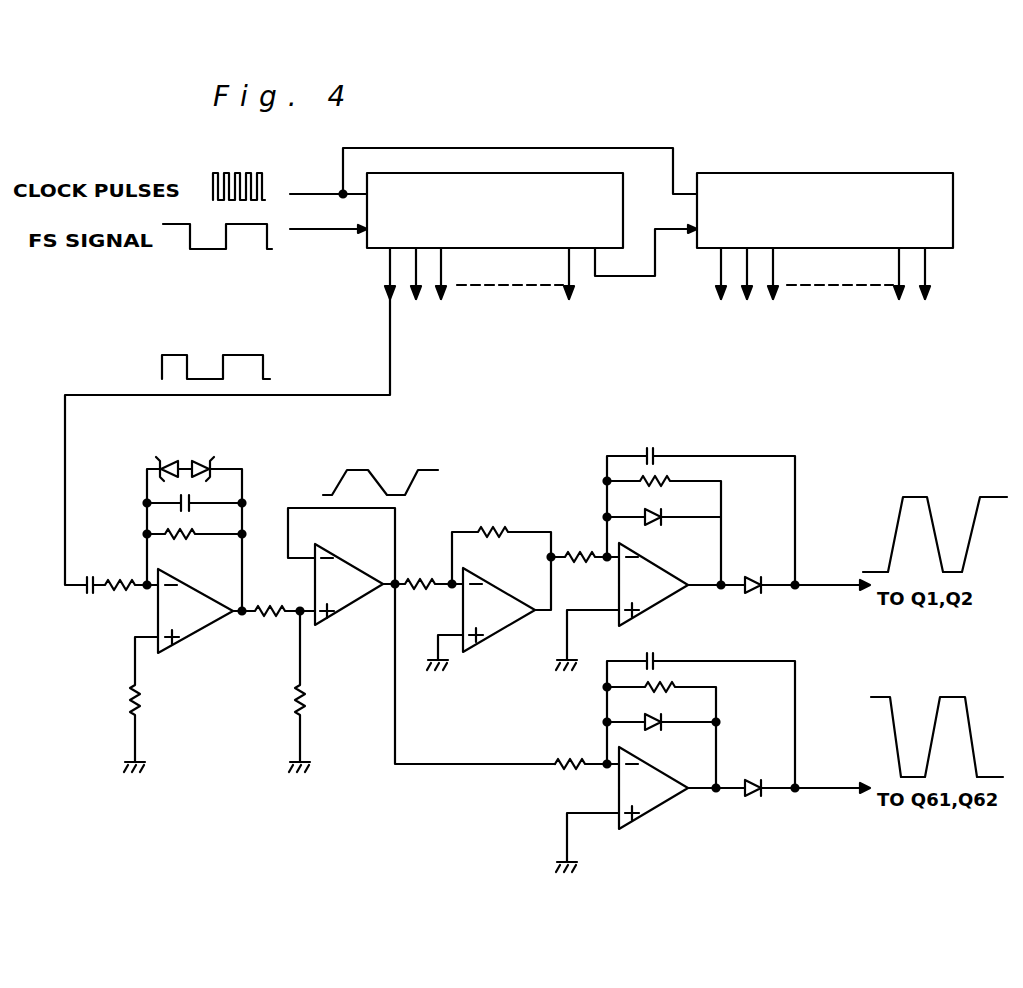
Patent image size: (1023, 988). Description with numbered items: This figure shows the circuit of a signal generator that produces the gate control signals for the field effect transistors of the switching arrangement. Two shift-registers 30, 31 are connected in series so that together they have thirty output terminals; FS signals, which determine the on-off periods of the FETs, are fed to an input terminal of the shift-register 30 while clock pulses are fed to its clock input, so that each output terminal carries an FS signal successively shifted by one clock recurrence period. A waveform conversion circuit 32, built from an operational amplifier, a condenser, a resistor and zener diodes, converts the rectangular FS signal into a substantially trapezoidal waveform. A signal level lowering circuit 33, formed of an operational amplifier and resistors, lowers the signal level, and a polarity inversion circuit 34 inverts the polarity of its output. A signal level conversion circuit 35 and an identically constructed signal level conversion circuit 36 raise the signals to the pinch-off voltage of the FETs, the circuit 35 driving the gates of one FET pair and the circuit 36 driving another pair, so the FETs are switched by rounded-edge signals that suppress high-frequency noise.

The shift-register 30 is at (623, 249).
The shift-register 31 is at (953, 249).
The waveform conversion circuit 32 is at (201, 647).
The signal level lowering circuit 33 is at (341, 629).
The polarity inversion circuit 34 is at (502, 649).
The signal level conversion circuit 35 is at (673, 612).
The signal level conversion circuit 36 is at (655, 822).